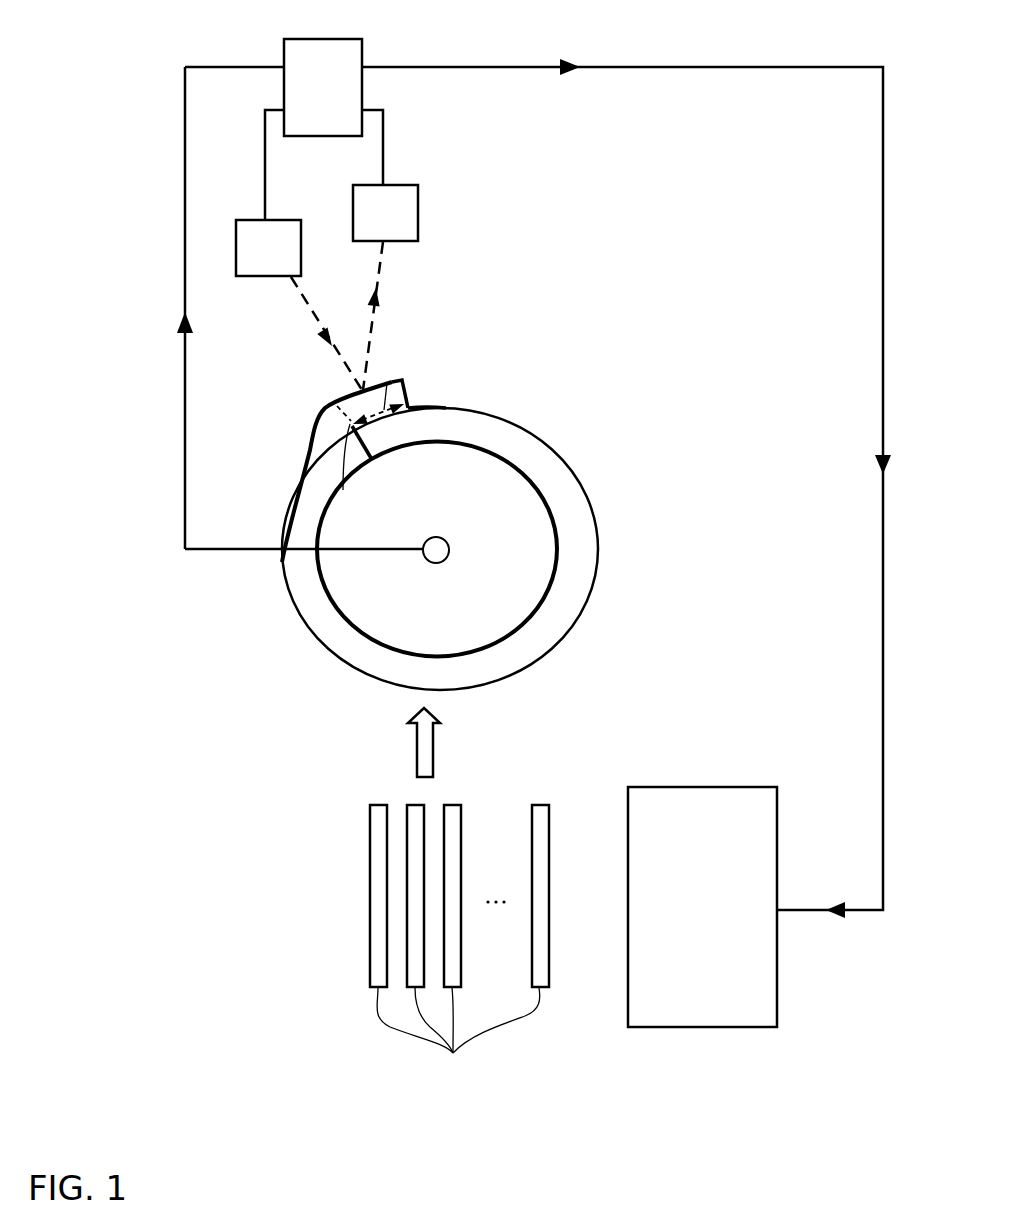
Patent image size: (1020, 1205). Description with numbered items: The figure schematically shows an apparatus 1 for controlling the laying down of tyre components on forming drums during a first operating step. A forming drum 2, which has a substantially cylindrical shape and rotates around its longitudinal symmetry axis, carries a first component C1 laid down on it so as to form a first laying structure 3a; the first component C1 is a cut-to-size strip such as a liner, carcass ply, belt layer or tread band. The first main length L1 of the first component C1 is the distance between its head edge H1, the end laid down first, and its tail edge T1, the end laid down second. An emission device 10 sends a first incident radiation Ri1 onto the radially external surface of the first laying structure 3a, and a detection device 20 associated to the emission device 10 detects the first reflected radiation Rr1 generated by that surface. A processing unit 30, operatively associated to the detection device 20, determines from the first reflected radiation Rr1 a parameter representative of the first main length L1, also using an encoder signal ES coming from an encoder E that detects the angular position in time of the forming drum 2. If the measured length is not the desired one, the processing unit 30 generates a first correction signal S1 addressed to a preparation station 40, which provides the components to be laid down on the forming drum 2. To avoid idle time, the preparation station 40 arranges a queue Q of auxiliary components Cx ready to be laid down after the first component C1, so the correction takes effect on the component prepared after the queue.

The apparatus 1 is at (148, 592).
The forming drum 2 is at (522, 597).
The first laying structure 3a is at (570, 414).
The emission device 10 is at (268, 248).
The detection device 20 is at (385, 213).
The processing unit 30 is at (284, 129).
The preparation station 40 is at (722, 1003).
The first correction signal S1 is at (626, 488).
The encoder signal ES is at (163, 308).
The encoder E is at (329, 549).
The first component C1 is at (567, 490).
The first main length L1 is at (385, 382).
The tail edge T1 is at (407, 392).
The head edge H1 is at (363, 438).
The first incident radiation Ri1 is at (342, 350).
The first reflected radiation Rr1 is at (397, 316).
The queue Q is at (331, 886).
The auxiliary components Cx is at (458, 1038).